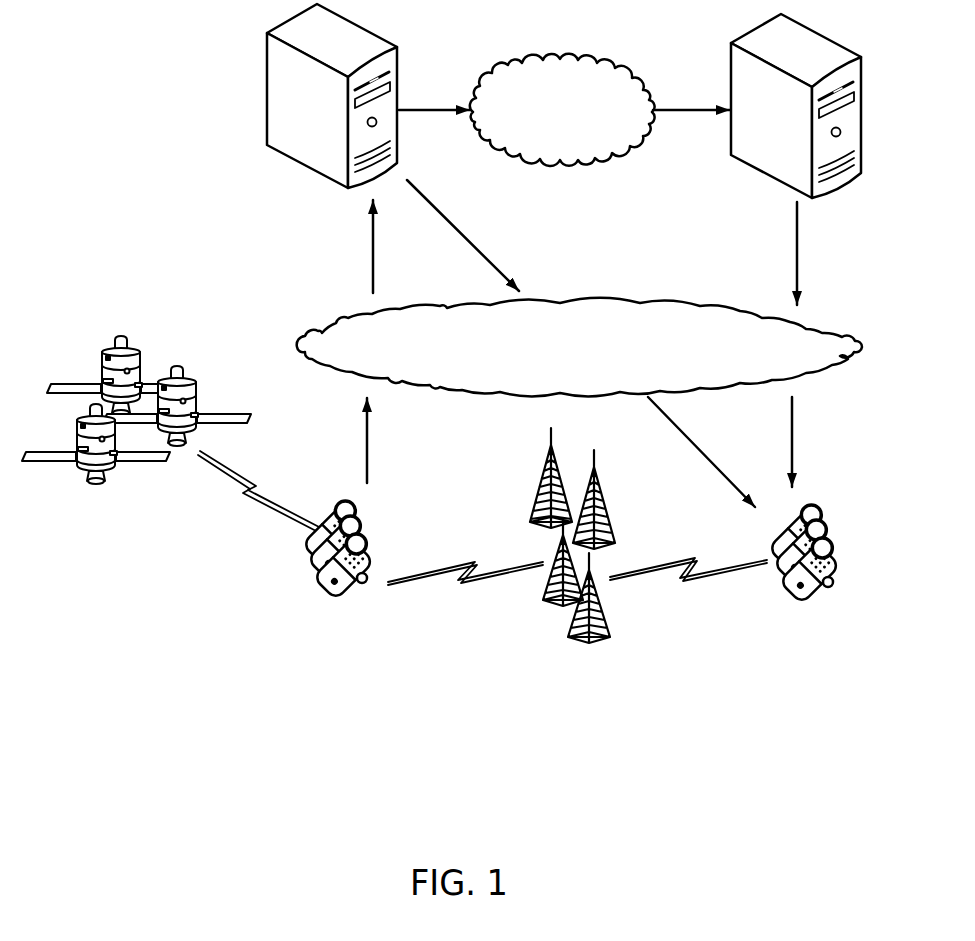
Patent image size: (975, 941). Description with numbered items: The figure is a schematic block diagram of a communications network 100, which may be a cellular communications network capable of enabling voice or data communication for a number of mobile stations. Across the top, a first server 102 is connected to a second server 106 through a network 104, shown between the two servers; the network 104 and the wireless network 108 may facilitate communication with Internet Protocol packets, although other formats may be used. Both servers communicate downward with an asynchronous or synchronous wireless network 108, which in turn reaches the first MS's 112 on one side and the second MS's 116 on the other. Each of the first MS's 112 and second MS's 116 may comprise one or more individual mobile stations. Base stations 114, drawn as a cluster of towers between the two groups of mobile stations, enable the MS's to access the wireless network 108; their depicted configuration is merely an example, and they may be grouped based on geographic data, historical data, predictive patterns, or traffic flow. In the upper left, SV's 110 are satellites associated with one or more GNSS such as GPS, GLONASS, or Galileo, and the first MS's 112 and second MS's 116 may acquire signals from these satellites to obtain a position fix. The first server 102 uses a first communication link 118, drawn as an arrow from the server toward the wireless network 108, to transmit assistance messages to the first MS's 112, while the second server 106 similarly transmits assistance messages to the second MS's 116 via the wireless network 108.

The communications network 100 is at (77, 41).
The first server 102 is at (398, 53).
The network 104 is at (573, 60).
The second server 106 is at (862, 80).
The wireless network 108 is at (688, 305).
The SV's 110 is at (140, 360).
The first MS's 112 is at (378, 525).
The base stations 114 is at (598, 497).
The second MS's 116 is at (840, 523).
The first communication link 118 is at (467, 236).